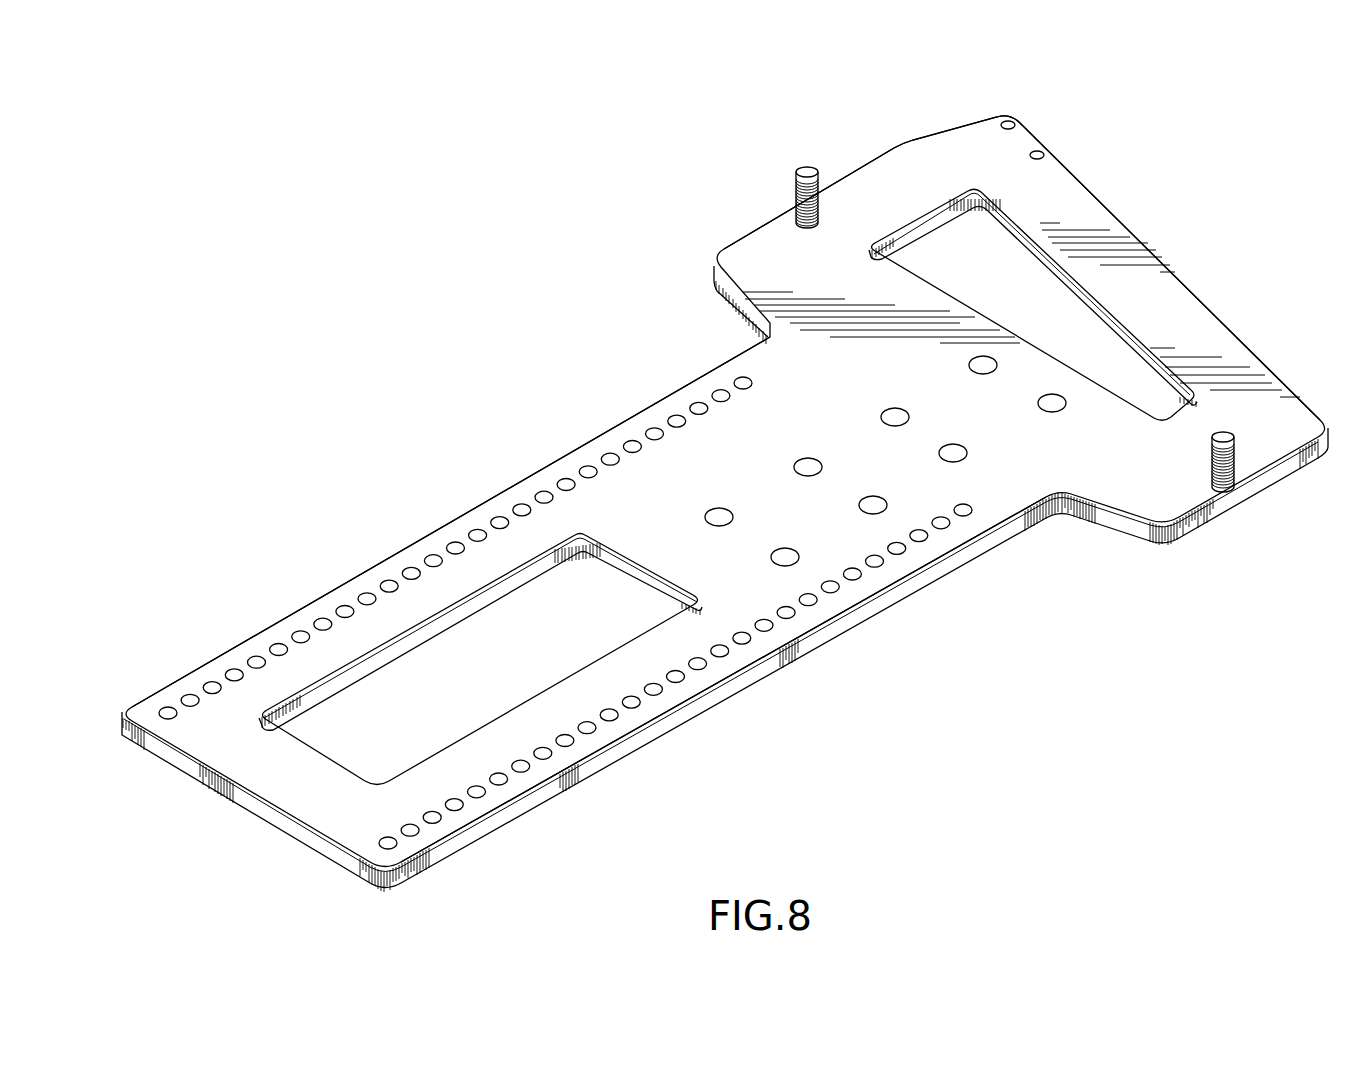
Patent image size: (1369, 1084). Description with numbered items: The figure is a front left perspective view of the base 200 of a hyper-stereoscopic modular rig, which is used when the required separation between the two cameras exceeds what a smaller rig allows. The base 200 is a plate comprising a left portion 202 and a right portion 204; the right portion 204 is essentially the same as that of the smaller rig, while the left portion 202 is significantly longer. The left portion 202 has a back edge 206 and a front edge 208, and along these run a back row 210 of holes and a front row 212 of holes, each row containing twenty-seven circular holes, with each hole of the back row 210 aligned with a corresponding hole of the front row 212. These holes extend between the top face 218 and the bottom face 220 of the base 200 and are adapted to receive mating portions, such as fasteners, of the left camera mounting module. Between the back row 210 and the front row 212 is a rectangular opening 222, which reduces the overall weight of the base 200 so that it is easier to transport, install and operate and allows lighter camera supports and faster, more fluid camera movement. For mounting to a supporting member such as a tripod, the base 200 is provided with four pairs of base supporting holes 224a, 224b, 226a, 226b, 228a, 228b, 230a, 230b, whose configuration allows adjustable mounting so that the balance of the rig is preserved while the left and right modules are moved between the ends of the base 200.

The base 200 is at (305, 275).
The left portion 202 is at (352, 637).
The right portion 204 is at (885, 190).
The back edge 206 is at (383, 561).
The front edge 208 is at (762, 670).
The back row of holes 210 is at (159, 711).
The front row of holes 212 is at (378, 843).
The top face 218 is at (642, 517).
The bottom face 220 is at (640, 750).
The rectangular opening 222 is at (452, 676).
The base supporting hole 224a is at (781, 550).
The base supporting hole 224b is at (715, 512).
The base supporting hole 226a is at (870, 500).
The base supporting hole 226b is at (805, 462).
The base supporting hole 228a is at (955, 450).
The base supporting hole 228b is at (893, 412).
The base supporting hole 230a is at (1053, 398).
The base supporting hole 230b is at (983, 358).